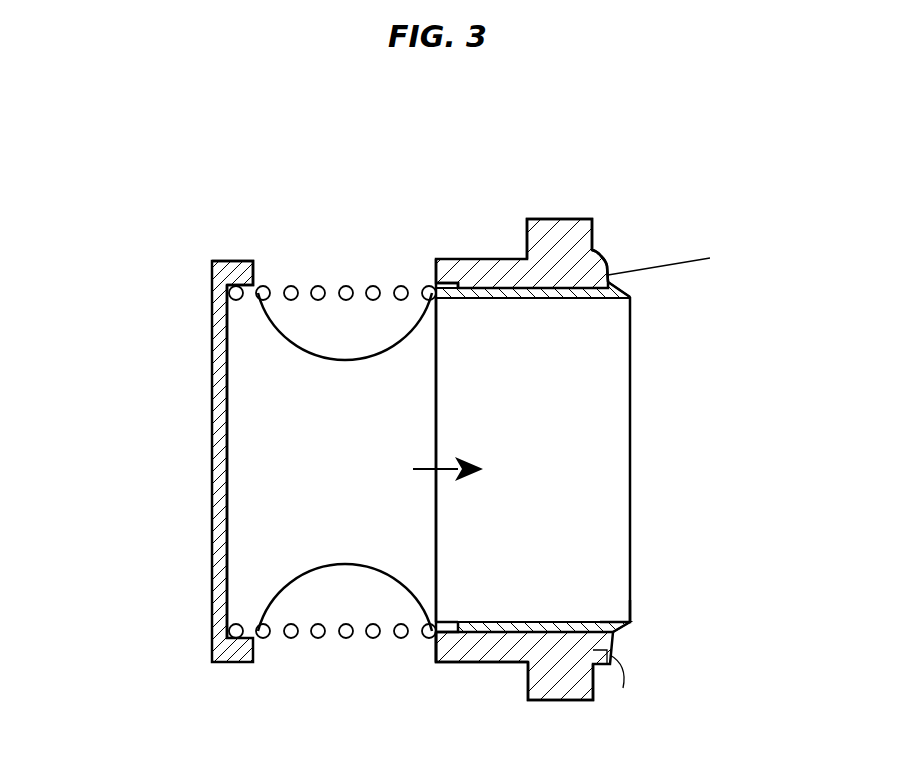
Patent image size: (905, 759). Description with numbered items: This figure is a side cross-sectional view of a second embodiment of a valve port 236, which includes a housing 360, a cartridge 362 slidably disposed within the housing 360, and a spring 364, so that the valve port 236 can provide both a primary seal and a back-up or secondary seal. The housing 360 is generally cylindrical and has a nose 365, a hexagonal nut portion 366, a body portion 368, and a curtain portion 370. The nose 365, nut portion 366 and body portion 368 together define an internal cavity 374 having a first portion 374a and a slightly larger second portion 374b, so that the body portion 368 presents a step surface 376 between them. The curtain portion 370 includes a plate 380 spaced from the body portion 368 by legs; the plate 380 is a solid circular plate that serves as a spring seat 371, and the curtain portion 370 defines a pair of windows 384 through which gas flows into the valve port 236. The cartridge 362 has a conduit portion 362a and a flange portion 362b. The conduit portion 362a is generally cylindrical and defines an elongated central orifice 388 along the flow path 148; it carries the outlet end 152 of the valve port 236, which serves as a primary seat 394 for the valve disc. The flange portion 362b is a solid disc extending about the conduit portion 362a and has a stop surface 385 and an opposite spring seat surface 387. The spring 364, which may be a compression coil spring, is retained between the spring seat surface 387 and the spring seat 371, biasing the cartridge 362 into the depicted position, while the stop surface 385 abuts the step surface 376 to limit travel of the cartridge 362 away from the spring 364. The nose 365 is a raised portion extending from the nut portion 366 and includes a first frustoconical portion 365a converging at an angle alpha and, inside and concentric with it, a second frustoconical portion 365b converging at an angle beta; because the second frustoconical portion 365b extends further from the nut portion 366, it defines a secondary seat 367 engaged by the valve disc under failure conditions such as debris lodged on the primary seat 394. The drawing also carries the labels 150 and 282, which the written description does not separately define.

The flow path 148 is at (425, 467).
The flange 150 is at (223, 283).
The outlet end 152 is at (608, 618).
The valve port 236 is at (565, 432).
The cavity 282 is at (300, 478).
The housing 360 is at (565, 448).
The cartridge 362 is at (565, 448).
The conduit portion 362a is at (585, 634).
The flange portion 362b is at (450, 634).
The spring 364 is at (289, 278).
The nose 365 is at (620, 257).
The first frustoconical portion 365a is at (593, 250).
The second frustoconical portion 365b is at (608, 280).
The hexagonal nut portion 366 is at (588, 220).
The secondary seat 367 is at (613, 634).
The body portion 368 is at (508, 265).
The curtain portion 370 is at (276, 412).
The spring seat 371 is at (234, 510).
The internal cavity 374 is at (586, 298).
The first portion of the internal cavity 374a is at (560, 296).
The second portion of the internal cavity 374b is at (430, 297).
The step surface 376 is at (443, 292).
The plate 380 is at (220, 548).
The windows 384 is at (267, 603).
The stop surface 385 is at (460, 634).
The spring seat surface 387 is at (436, 538).
The central orifice 388 is at (582, 612).
The primary seat 394 is at (617, 625).